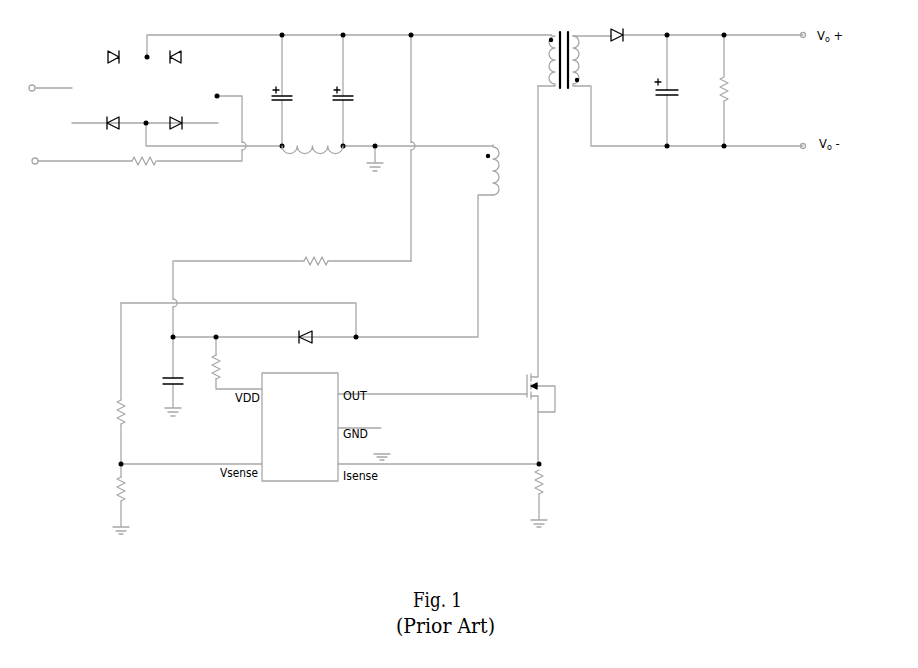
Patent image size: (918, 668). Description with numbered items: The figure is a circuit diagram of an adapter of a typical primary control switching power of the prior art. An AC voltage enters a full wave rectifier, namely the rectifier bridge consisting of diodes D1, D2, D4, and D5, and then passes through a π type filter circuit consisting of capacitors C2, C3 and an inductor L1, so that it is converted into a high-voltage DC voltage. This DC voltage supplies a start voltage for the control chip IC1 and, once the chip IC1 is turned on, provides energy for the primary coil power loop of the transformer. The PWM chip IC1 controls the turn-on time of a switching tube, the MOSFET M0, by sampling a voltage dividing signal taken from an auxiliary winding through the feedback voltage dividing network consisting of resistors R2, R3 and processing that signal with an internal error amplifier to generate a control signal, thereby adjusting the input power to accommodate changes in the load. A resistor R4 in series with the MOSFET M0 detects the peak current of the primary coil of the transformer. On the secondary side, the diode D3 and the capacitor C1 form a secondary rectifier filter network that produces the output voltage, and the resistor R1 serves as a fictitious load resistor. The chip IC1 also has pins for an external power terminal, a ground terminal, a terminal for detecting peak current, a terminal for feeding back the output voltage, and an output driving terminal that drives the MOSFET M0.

The diode D1 is at (179, 63).
The diode D2 is at (113, 65).
The diode D3 is at (618, 42).
The diode D4 is at (179, 115).
The diode D5 is at (113, 115).
The fictitious load resistor R1 is at (144, 169).
The resistor R2 is at (111, 412).
The resistor R3 is at (111, 489).
The resistor R4 is at (527, 482).
The capacitor C1 is at (676, 88).
The capacitor C2 is at (292, 92).
The capacitor C3 is at (353, 92).
The inductor L1 is at (312, 158).
The control chip IC1 is at (300, 427).
The MOSFET M0 is at (524, 396).